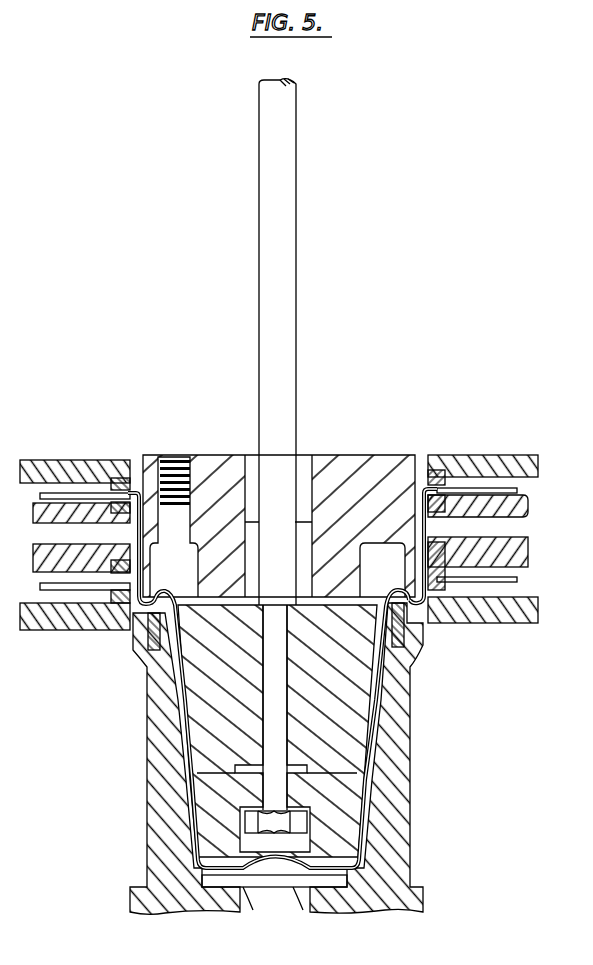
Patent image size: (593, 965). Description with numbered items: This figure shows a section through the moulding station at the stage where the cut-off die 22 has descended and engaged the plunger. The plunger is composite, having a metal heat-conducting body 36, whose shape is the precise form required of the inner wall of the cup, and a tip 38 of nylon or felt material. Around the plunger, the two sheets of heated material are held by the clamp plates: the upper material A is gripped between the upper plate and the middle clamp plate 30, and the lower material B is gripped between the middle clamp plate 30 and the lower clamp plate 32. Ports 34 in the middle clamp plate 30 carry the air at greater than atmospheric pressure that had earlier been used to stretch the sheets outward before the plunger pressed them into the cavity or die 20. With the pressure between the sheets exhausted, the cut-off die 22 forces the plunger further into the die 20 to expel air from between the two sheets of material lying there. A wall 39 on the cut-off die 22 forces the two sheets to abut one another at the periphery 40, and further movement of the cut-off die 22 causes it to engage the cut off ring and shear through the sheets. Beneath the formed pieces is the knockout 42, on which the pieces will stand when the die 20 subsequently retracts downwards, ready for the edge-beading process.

The cavity or die 20 is at (385, 780).
The cut-off die 22 is at (375, 467).
The middle clamp plate 30 is at (518, 503).
The lower clamp plate 32 is at (520, 607).
The ports 34 is at (518, 527).
The metal heat-conducting body 36 is at (343, 747).
The tip 38 is at (333, 835).
The wall 39 is at (128, 608).
The periphery 40 is at (138, 613).
The knockout 42 is at (277, 890).
The upper material A is at (390, 595).
The lower material B is at (383, 657).